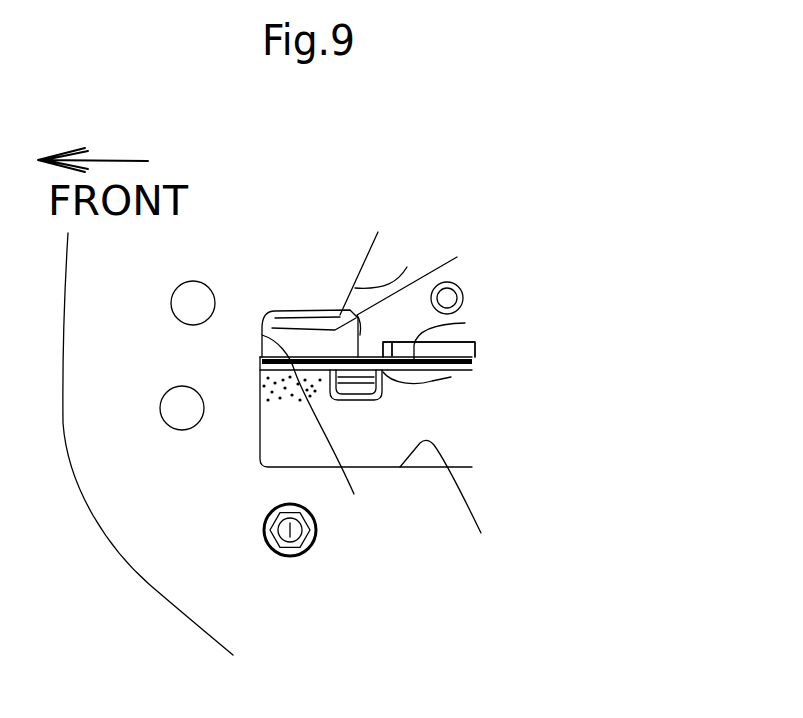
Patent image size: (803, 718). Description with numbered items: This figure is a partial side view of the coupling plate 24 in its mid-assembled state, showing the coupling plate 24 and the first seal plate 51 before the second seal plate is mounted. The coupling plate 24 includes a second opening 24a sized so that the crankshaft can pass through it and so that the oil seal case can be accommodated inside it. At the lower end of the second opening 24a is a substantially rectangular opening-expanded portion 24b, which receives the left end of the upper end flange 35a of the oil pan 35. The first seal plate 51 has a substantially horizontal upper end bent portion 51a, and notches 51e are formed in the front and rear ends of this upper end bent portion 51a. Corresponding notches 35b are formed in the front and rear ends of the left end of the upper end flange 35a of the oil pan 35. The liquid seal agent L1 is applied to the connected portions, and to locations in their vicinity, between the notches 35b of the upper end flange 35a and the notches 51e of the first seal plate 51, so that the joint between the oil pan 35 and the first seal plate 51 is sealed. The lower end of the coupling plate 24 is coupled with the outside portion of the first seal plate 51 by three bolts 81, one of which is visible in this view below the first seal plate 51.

The coupling plate 24 is at (218, 578).
The second opening 24a is at (407, 267).
The opening-expanded portion 24b is at (463, 513).
The oil pan 35 is at (429, 349).
The upper end flange 35a is at (465, 323).
The notches 35b is at (263, 337).
The first seal plate 51 is at (427, 413).
The upper end bent portion 51a is at (433, 380).
The notches 51e is at (273, 373).
The bolts 81 is at (293, 543).
The liquid seal agent L1 is at (323, 440).